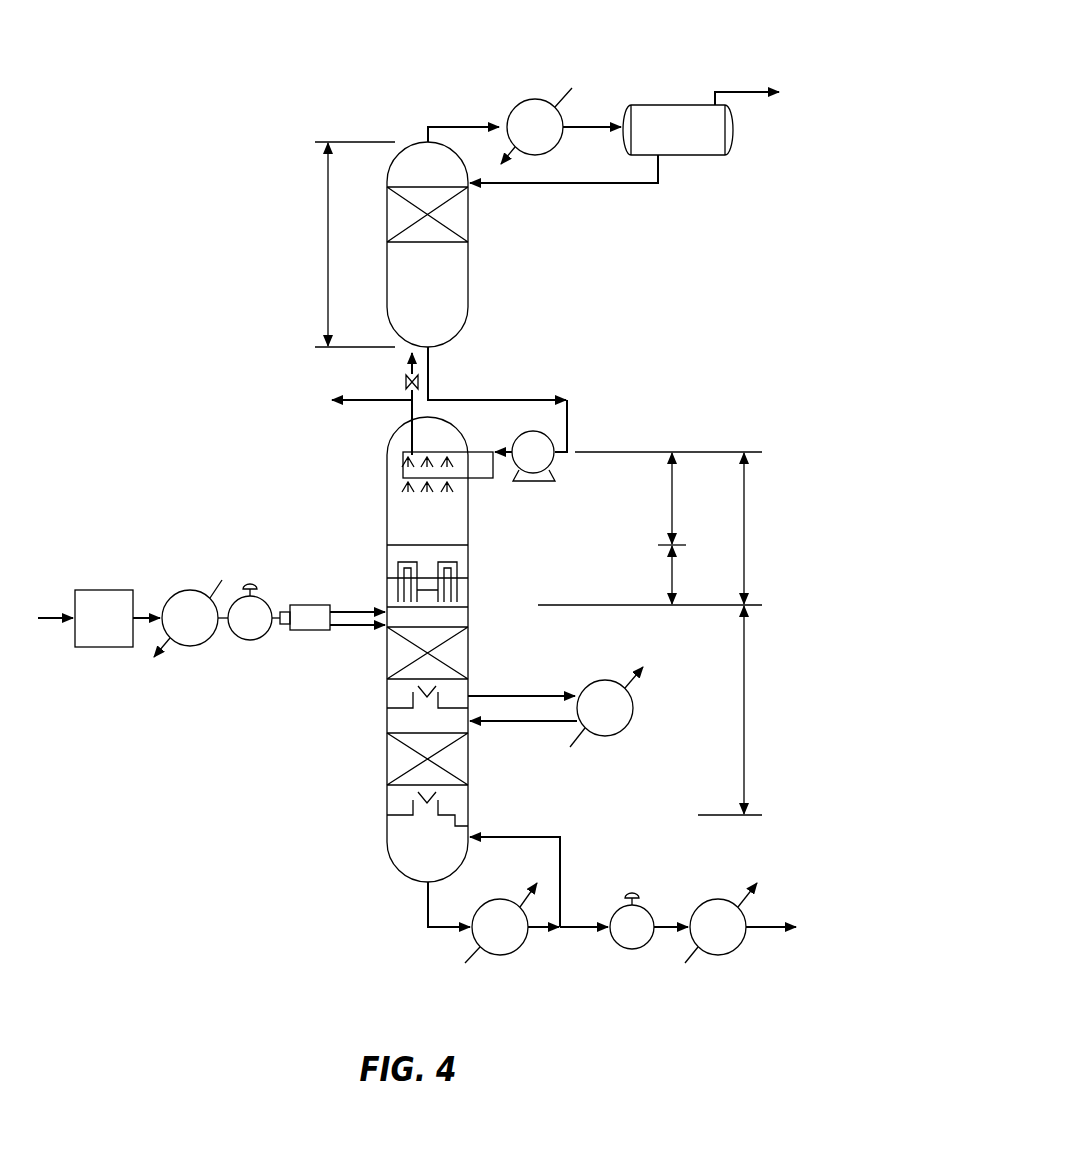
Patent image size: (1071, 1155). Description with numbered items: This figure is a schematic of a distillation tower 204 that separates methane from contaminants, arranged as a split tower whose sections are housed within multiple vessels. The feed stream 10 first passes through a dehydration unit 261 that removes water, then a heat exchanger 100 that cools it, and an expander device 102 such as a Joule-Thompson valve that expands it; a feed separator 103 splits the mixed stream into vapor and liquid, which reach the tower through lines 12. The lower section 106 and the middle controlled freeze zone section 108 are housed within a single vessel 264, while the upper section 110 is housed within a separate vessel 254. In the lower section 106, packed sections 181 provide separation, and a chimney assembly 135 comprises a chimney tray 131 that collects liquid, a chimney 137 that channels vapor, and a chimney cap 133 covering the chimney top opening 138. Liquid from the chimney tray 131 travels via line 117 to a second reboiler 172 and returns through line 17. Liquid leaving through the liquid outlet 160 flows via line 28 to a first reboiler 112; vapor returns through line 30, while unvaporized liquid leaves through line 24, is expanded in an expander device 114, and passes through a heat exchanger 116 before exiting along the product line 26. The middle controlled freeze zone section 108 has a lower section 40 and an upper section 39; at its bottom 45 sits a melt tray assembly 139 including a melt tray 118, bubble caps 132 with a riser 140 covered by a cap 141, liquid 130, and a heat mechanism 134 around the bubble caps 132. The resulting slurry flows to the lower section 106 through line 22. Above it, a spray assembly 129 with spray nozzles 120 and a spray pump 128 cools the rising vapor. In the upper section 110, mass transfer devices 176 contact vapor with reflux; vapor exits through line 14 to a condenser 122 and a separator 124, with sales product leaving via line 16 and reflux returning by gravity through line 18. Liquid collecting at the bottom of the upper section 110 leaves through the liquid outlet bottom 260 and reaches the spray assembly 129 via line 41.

The distillation tower 204 is at (202, 110).
The feed stream 10 is at (48, 617).
The dehydration unit 261 is at (110, 590).
The heat exchanger 100 is at (195, 590).
The expander device 102 is at (243, 640).
The feed separator 103 is at (280, 625).
The line 12 is at (310, 605).
The line 22 is at (385, 612).
The packed section 181 is at (398, 628).
The heat mechanism 134 is at (397, 580).
The cap 141 is at (403, 562).
The melt tray assembly 139 is at (462, 552).
The bubble cap 132 is at (459, 565).
The liquid 130 is at (478, 577).
The riser 140 is at (468, 598).
The melt tray 118 is at (447, 600).
The bottom 45 is at (452, 627).
The chimney top opening 138 is at (416, 688).
The chimney 137 is at (398, 700).
The chimney assembly 135 is at (345, 712).
The chimney tray 131 is at (398, 712).
The chimney cap 133 is at (445, 688).
The line 117 is at (527, 695).
The line 17 is at (542, 722).
The second reboiler 172 is at (616, 681).
The vessel 264 is at (468, 800).
The line 30 is at (532, 837).
The liquid outlet 160 is at (425, 880).
The line 28 is at (440, 928).
The first reboiler 112 is at (508, 900).
The line 24 is at (575, 926).
The expander device 114 is at (640, 946).
The heat exchanger 116 is at (726, 900).
The product line 26 is at (758, 926).
The upper section 39 is at (673, 497).
The lower section 40 is at (673, 575).
The middle controlled freeze zone section 108 is at (745, 522).
The lower section 106 is at (745, 704).
The spray nozzle 120 is at (405, 484).
The spray pump 128 is at (557, 473).
The spray assembly 129 is at (493, 443).
The line 41 is at (506, 399).
The liquid outlet bottom 260 is at (433, 348).
The vessel 254 is at (470, 284).
The mass transfer device 176 is at (403, 186).
The upper section 110 is at (328, 240).
The line 14 is at (463, 126).
The condenser 122 is at (535, 99).
The separator 124 is at (652, 105).
The line 16 is at (730, 92).
The line 18 is at (610, 183).